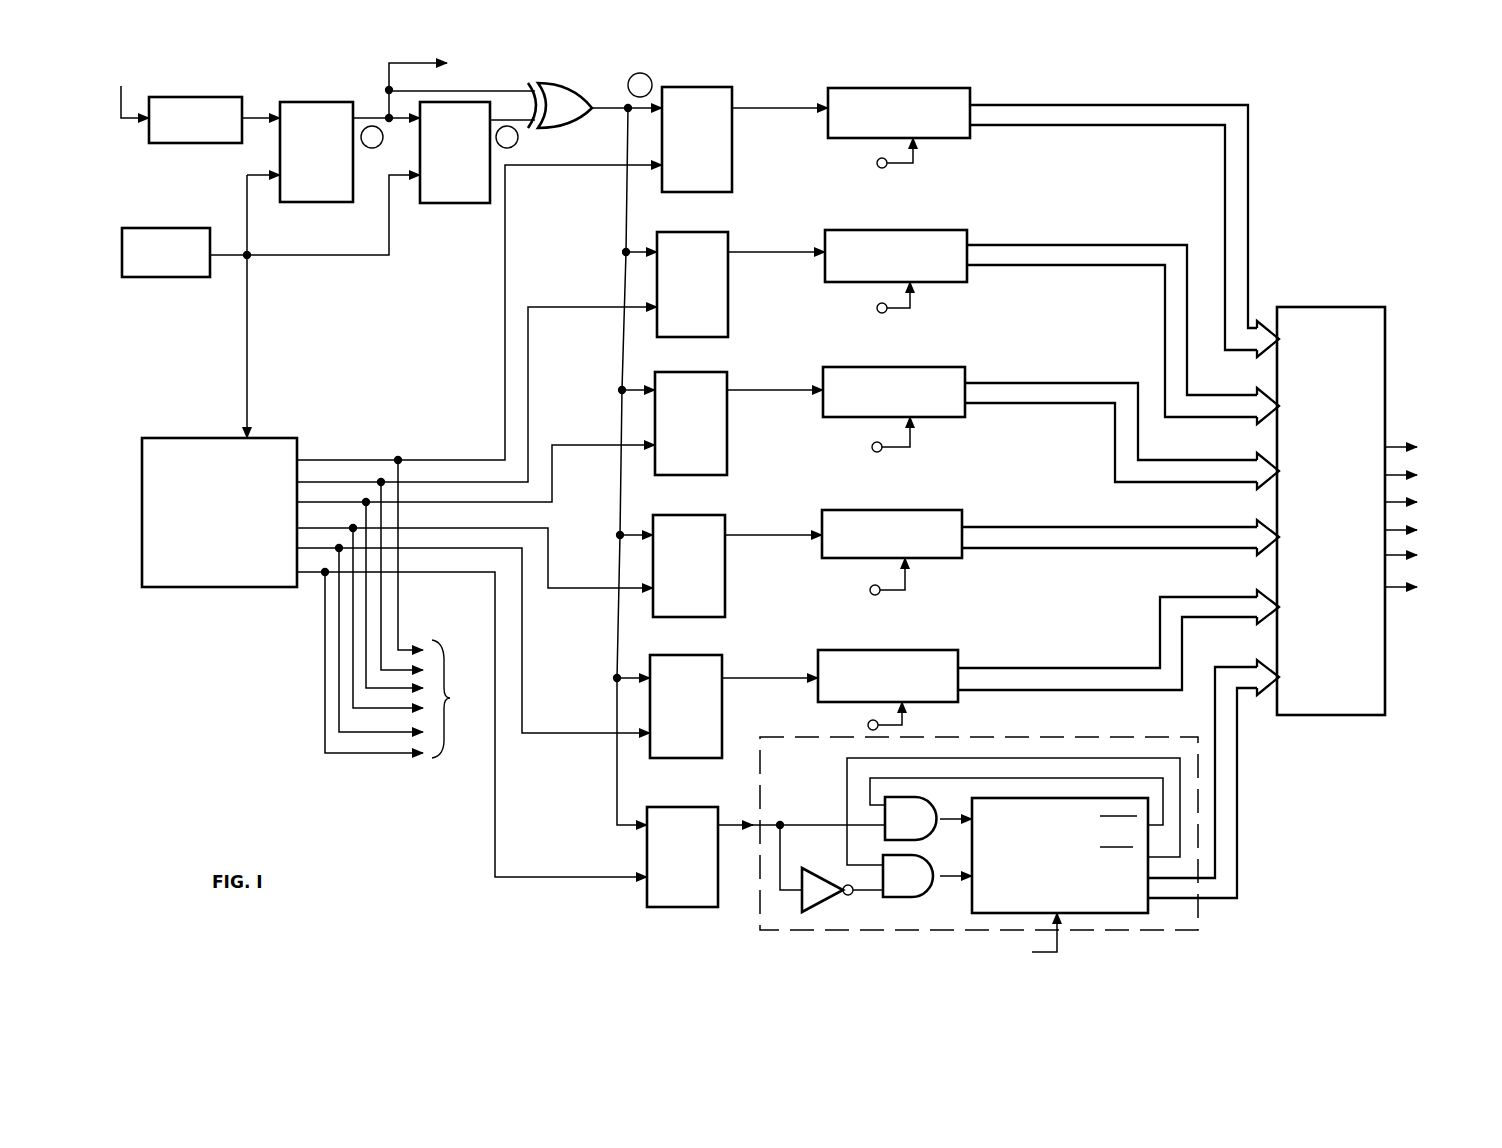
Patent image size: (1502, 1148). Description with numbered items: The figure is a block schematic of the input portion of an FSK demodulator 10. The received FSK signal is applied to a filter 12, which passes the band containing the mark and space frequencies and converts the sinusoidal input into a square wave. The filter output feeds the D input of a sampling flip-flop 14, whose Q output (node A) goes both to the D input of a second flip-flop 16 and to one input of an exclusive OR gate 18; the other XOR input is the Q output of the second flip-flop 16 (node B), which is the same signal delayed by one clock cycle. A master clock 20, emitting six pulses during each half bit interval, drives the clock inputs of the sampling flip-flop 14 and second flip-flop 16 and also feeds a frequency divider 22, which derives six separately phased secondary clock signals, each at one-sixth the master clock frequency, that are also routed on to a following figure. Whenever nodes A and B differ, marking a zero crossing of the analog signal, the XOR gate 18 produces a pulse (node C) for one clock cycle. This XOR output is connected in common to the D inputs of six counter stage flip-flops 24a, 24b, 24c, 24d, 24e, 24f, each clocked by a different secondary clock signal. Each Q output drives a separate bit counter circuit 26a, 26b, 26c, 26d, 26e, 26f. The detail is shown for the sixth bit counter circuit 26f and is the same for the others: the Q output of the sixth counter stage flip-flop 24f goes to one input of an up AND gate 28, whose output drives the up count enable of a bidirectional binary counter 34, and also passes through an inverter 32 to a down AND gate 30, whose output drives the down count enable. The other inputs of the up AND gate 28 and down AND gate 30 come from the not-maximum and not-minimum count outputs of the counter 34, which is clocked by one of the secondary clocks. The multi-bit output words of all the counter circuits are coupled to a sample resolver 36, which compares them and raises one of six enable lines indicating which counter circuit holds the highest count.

The demodulator 10 is at (467, 790).
The filter 12 is at (233, 97).
The sampling flip-flop 14 is at (314, 102).
The second flip-flop 16 is at (445, 203).
The exclusive OR gate 18 is at (565, 83).
The master clock 20 is at (160, 277).
The frequency divider 22 is at (232, 566).
The counter stage flip-flop 24a is at (732, 178).
The counter stage flip-flop 24b is at (728, 310).
The counter stage flip-flop 24c is at (727, 448).
The counter stage flip-flop 24d is at (725, 590).
The counter stage flip-flop 24e is at (722, 707).
The sixth counter stage flip-flop 24f is at (660, 907).
The bit counter circuit 26a is at (950, 138).
The bit counter circuit 26b is at (948, 282).
The bit counter circuit 26c is at (945, 417).
The bit counter circuit 26d is at (940, 558).
The bit counter circuit 26e is at (958, 660).
The sixth bit counter circuit 26f is at (998, 811).
The up AND gate 28 is at (917, 830).
The down AND gate 30 is at (915, 888).
The inverter 32 is at (838, 903).
The bidirectional binary counter 34 is at (1062, 842).
The sample resolver 36 is at (1330, 715).